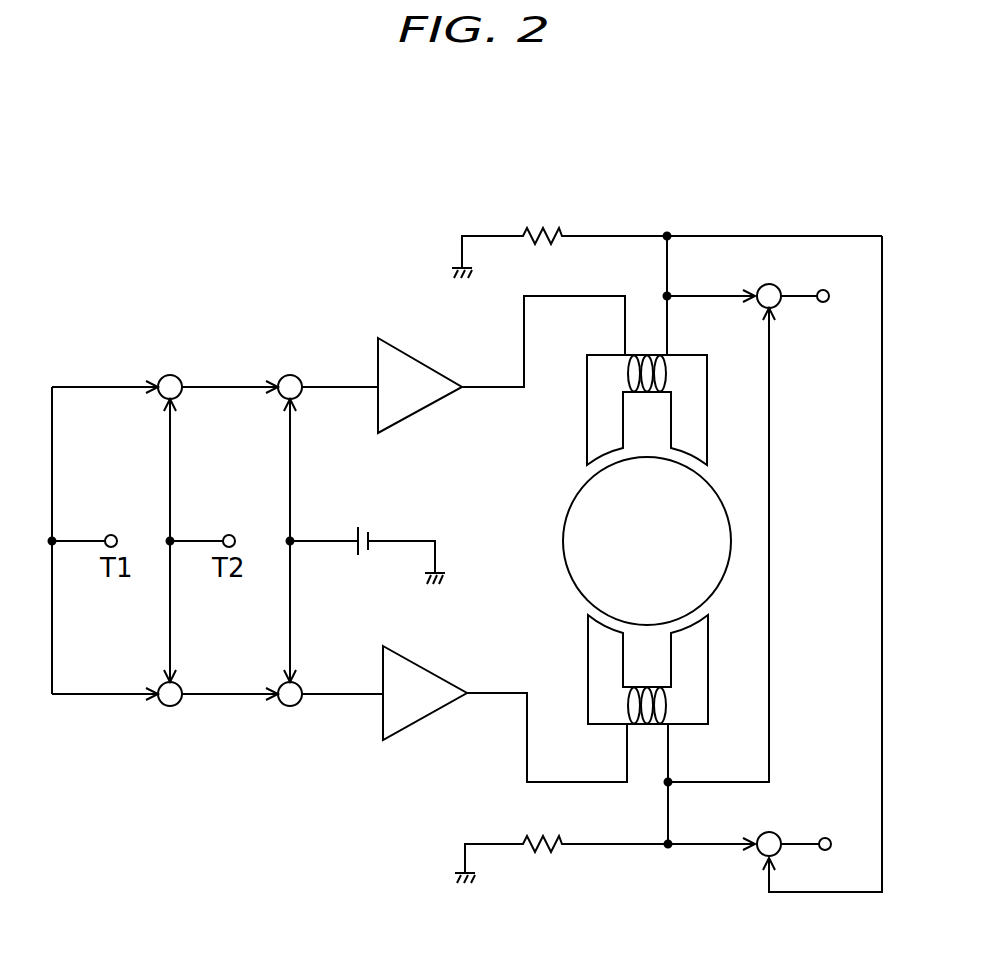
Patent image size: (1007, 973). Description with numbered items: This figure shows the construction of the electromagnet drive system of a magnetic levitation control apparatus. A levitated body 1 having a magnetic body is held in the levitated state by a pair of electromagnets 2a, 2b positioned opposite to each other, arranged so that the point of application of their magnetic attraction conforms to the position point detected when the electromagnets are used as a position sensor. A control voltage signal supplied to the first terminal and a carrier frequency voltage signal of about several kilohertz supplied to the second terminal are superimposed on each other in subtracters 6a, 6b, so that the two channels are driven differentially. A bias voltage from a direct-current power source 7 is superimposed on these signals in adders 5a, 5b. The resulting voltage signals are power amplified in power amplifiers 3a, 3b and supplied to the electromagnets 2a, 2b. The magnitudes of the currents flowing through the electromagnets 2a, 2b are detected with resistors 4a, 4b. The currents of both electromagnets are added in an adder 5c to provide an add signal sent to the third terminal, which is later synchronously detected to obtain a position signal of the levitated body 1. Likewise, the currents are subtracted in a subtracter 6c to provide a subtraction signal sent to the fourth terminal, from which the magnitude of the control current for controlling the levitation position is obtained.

The levitated body 1 is at (562, 537).
The electromagnet 2a is at (587, 416).
The electromagnet 2b is at (588, 666).
The power amplifier 3a is at (426, 360).
The power amplifier 3b is at (433, 668).
The resistor 4a is at (542, 228).
The resistor 4b is at (542, 854).
The adder 5a is at (290, 375).
The adder 5b is at (292, 707).
The adder 5c is at (770, 284).
The subtracter 6a is at (170, 375).
The subtracter 6b is at (172, 707).
The subtracter 6c is at (771, 830).
The direct-current power source 7 is at (356, 554).